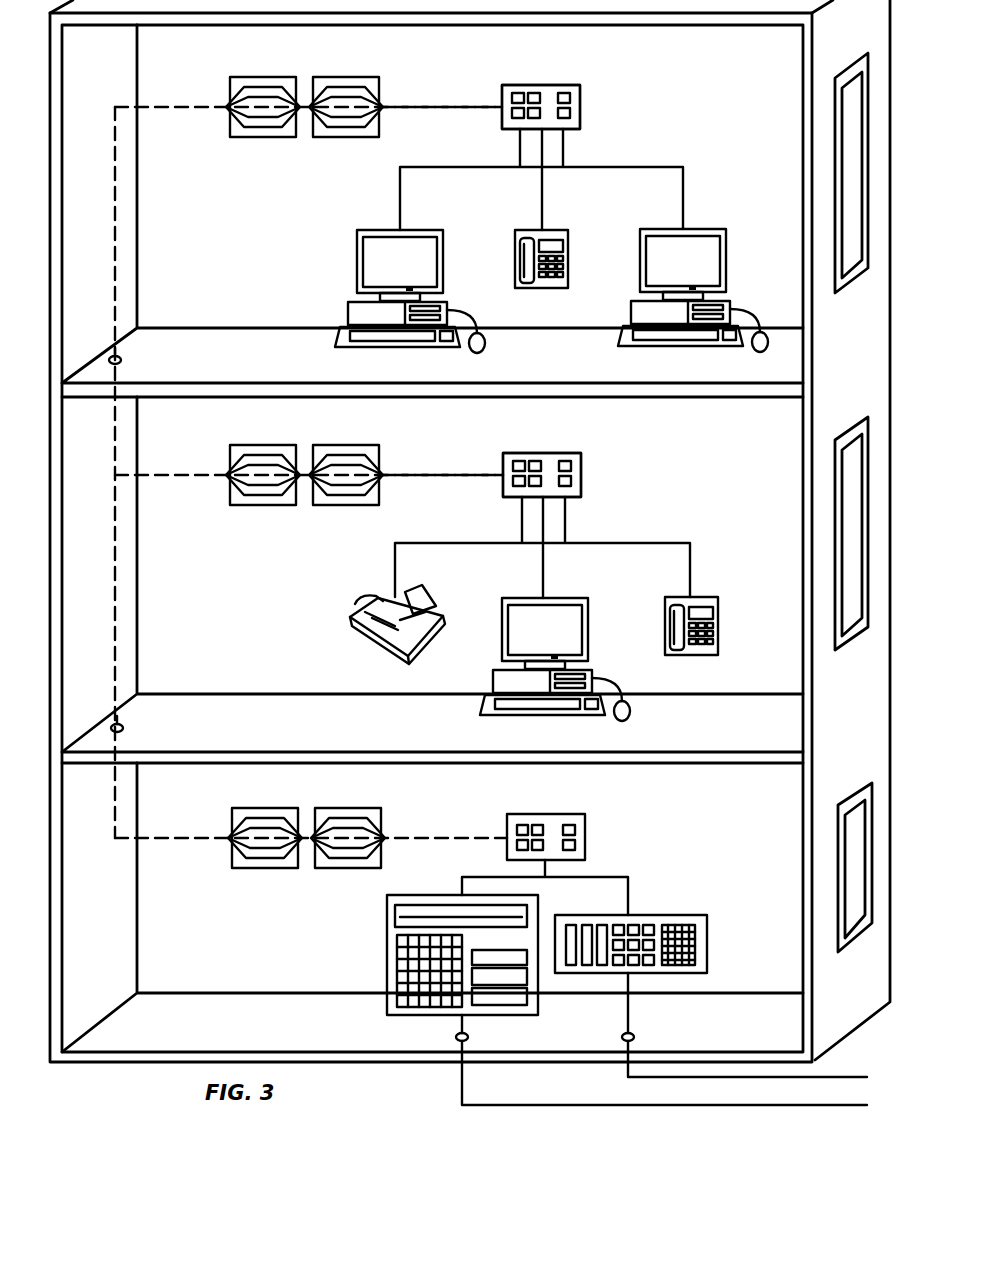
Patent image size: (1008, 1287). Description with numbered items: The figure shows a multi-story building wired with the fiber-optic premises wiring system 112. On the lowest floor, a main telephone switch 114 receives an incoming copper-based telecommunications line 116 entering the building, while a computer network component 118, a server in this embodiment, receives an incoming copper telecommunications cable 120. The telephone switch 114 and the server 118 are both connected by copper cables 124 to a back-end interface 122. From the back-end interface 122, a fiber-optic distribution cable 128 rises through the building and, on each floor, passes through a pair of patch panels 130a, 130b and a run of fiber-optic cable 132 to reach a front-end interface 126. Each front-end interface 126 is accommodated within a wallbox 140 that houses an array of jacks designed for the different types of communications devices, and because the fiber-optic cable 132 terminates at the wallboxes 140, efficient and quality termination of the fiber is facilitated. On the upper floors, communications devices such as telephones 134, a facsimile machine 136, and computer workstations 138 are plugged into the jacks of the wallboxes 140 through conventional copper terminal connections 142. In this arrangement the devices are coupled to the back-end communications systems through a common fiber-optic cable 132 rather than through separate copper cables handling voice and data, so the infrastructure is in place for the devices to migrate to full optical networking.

The fiber-optic premises wiring system 112 is at (697, 138).
The main telephone switch 114 is at (387, 938).
The incoming copper-based telecommunications line 116 is at (462, 1086).
The computer network component 118 is at (708, 935).
The incoming copper telecommunications cable 120 is at (630, 1012).
The back-end interface 122 is at (589, 833).
The copper cables 124 is at (628, 895).
The front-end interface 126 is at (585, 97).
The fiber-optic distribution cable 128 is at (185, 843).
The patch panel 130a is at (230, 82).
The patch panel 130b is at (380, 82).
The fiber-optic cable 132 is at (440, 108).
The telephone 134 is at (569, 262).
The facsimile machine 136 is at (382, 638).
The computer workstation 138 is at (357, 262).
The wallbox 140 is at (556, 85).
The copper terminal connection 142 is at (400, 202).